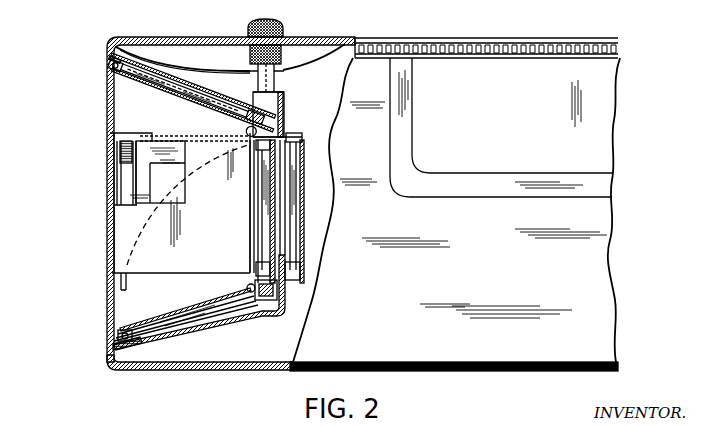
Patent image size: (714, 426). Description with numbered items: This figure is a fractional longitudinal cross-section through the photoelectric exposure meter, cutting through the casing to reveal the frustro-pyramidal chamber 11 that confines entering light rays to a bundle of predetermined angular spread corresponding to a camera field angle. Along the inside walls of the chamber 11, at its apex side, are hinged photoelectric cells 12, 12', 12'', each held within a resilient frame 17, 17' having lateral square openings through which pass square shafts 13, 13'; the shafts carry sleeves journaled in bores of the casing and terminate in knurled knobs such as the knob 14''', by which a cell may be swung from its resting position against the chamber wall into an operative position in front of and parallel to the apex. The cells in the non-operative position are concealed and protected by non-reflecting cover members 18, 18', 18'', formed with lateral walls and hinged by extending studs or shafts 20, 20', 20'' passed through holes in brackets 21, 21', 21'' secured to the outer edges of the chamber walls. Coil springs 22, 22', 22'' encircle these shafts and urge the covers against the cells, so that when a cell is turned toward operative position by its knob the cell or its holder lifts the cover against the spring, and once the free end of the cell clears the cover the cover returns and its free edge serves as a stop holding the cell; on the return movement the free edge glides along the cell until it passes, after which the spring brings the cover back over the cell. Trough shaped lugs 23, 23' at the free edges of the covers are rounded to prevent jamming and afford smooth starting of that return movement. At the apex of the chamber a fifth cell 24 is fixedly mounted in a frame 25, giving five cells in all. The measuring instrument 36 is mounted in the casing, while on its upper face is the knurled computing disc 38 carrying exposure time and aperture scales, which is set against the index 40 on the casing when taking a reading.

The frustro-pyramidal chamber 11 is at (161, 114).
The photoelectric cell 12 is at (193, 85).
The photoelectric cell 12' is at (241, 211).
The photoelectric cell 12'' is at (176, 172).
The square shaft 13 is at (282, 114).
The square shaft 13' is at (209, 302).
The knurled knob 14''' is at (250, 48).
The resilient frame 17 is at (183, 79).
The resilient frame 17' is at (243, 211).
The cover member 18 is at (193, 100).
The cover member 18' is at (186, 314).
The cover member 18'' is at (159, 211).
The shaft 20 is at (95, 77).
The shaft 20' is at (128, 318).
The shaft 20'' is at (103, 173).
The bracket 21 is at (97, 65).
The bracket 21' is at (101, 327).
The bracket 21'' is at (92, 203).
The coil spring 22 is at (96, 51).
The coil spring 22' is at (105, 345).
The coil spring 22'' is at (98, 153).
The trough shaped lug 23 is at (241, 125).
The trough shaped lug 23' is at (229, 285).
The fifth cell 24 is at (291, 222).
The frame 25 is at (301, 204).
The measuring instrument 36 is at (488, 188).
The knurled disc 38 is at (617, 52).
The index 40 is at (214, 370).